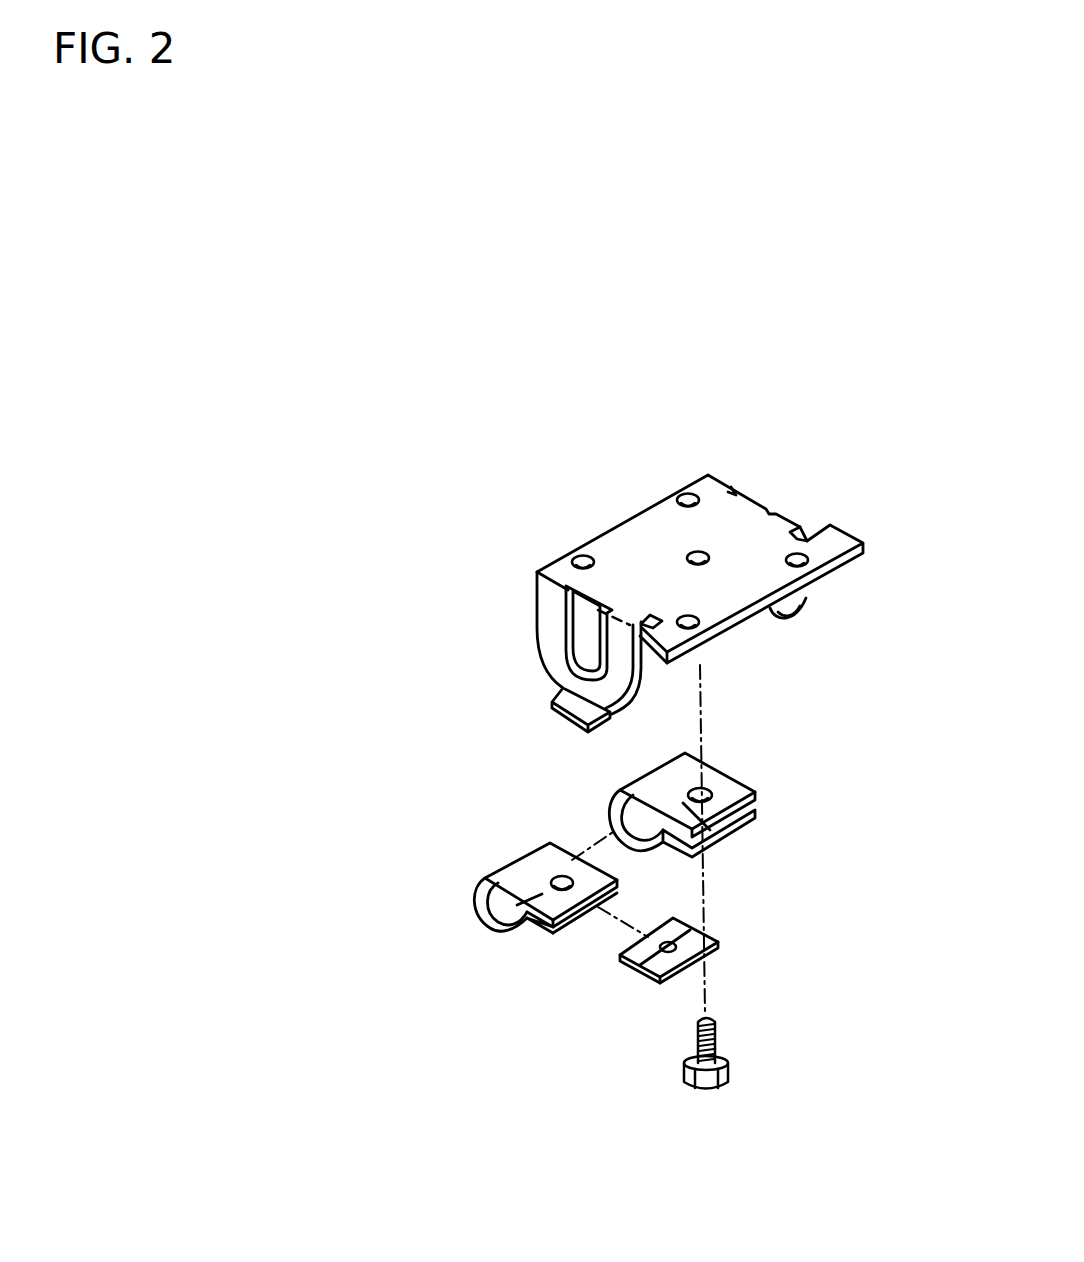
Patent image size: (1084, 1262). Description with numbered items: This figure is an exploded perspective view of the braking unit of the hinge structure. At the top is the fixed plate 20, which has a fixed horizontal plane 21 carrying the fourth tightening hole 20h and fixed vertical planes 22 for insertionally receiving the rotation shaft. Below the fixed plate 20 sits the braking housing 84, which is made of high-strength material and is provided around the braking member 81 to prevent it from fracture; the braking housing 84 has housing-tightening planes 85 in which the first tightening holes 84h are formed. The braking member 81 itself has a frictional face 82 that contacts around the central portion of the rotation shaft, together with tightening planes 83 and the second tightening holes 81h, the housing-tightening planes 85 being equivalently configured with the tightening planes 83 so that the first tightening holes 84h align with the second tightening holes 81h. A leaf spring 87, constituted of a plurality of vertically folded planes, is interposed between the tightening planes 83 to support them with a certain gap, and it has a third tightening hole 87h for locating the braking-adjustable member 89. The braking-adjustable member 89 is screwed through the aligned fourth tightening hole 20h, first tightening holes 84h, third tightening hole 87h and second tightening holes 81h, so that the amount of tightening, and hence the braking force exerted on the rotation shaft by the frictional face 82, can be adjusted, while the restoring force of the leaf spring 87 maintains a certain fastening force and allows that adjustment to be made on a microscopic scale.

The fixed plate 20 is at (723, 467).
The fourth tightening hole 20h is at (693, 558).
The fixed horizontal plane 21 is at (837, 545).
The fixed vertical planes 22 is at (553, 636).
The braking member 81 is at (495, 898).
The second tightening holes 81h is at (565, 892).
The frictional face 82 is at (500, 902).
The tightening planes 83 is at (527, 917).
The braking housing 84 is at (666, 810).
The first tightening holes 84h is at (710, 785).
The housing-tightening planes 85 is at (712, 828).
The leaf spring 87 is at (722, 984).
The third tightening hole 87h is at (658, 952).
The braking-adjustable member 89 is at (738, 1075).